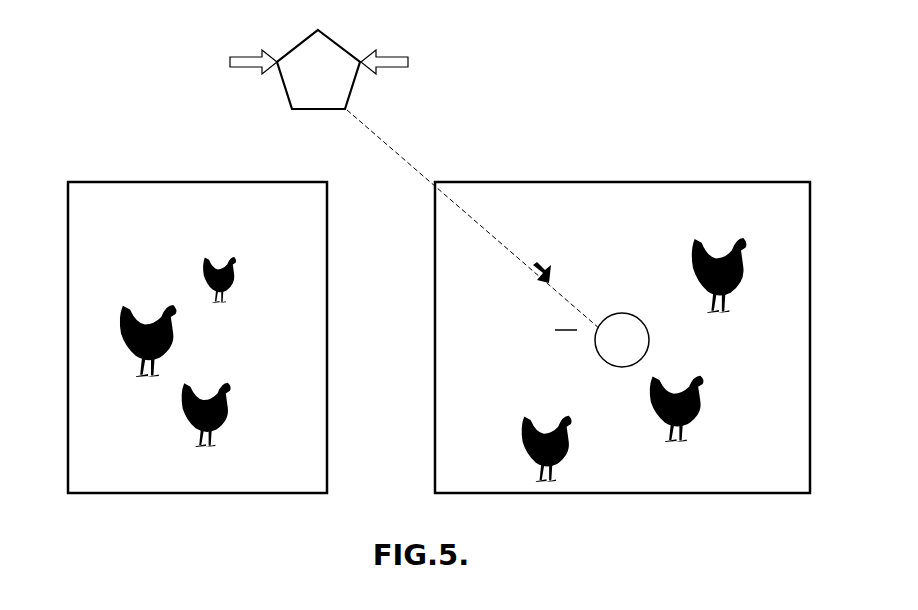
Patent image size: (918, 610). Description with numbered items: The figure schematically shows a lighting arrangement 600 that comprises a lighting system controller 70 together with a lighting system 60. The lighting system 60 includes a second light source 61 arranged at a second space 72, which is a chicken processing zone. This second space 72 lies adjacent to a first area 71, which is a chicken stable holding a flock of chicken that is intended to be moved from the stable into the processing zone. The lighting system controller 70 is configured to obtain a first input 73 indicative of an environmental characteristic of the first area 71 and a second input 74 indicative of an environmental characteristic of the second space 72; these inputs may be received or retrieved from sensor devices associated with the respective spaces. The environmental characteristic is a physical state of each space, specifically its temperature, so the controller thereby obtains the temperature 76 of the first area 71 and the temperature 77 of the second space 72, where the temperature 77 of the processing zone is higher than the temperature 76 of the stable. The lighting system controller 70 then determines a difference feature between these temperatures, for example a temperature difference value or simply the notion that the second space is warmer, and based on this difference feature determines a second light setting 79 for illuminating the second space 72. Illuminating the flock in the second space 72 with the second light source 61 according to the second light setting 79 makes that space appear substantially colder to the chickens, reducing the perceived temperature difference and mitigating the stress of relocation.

The lighting arrangement 600 is at (141, 63).
The lighting system controller 70 is at (273, 94).
The first input 73 is at (238, 53).
The second input 74 is at (393, 70).
The second light setting 79 is at (553, 279).
The temperature of the first space 76 is at (307, 213).
The temperature of the second space 77 is at (445, 224).
The first area 71 is at (292, 407).
The second space 72 is at (480, 443).
The lighting system 60 is at (616, 291).
The second light source 61 is at (602, 340).